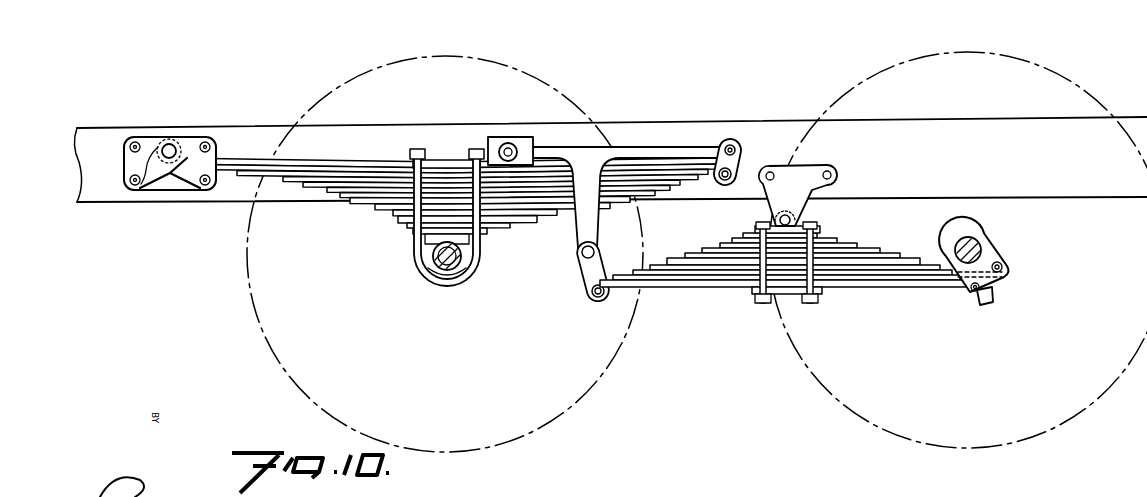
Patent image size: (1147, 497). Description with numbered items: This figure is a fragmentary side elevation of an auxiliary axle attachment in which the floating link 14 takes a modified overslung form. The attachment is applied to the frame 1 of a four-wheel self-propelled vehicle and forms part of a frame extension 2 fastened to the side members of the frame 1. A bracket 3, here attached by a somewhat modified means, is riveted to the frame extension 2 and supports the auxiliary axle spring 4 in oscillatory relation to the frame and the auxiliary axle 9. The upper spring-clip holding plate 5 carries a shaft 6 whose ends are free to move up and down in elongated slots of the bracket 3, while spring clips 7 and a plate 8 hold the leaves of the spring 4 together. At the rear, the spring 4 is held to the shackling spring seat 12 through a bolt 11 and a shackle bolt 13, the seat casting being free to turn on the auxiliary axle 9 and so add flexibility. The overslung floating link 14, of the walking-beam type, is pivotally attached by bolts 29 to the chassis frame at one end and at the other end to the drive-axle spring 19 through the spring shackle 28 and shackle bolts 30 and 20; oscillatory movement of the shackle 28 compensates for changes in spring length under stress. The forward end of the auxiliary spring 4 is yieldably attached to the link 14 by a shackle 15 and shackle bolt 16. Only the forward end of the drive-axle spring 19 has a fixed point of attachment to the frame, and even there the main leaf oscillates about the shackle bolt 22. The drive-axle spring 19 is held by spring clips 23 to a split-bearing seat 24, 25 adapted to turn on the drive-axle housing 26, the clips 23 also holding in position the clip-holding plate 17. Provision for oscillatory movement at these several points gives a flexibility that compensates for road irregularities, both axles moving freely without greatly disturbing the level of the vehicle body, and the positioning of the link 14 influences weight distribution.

The frame 1 is at (366, 134).
The frame extension 2 is at (988, 126).
The bracket 3 is at (800, 205).
The auxiliary axle spring 4 is at (868, 272).
The upper spring-clip holding plate 5 is at (822, 232).
The shaft 6 is at (795, 221).
The spring clip 7 is at (760, 268).
The plate 8 is at (790, 300).
The auxiliary axle 9 is at (982, 245).
The bolt 11 is at (980, 303).
The shackling spring seat 12 is at (1006, 264).
The shackle bolt 13 is at (1008, 286).
The floating link 14 is at (610, 150).
The shackle 15 is at (592, 275).
The shackle bolt 16 is at (580, 253).
The upper spring-clip holding plate 17 is at (440, 160).
The drive-axle spring 19 is at (352, 200).
The shackle bolt 20 is at (752, 197).
The shackle bolt 22 is at (174, 148).
The spring clip 23 is at (412, 243).
The split-bearing seat 24 is at (490, 235).
The split-bearing seat 25 is at (455, 273).
The drive-axle housing 26 is at (440, 276).
The spring shackle 28 is at (743, 160).
The bolt 29 is at (512, 148).
The shackle bolt 30 is at (736, 146).